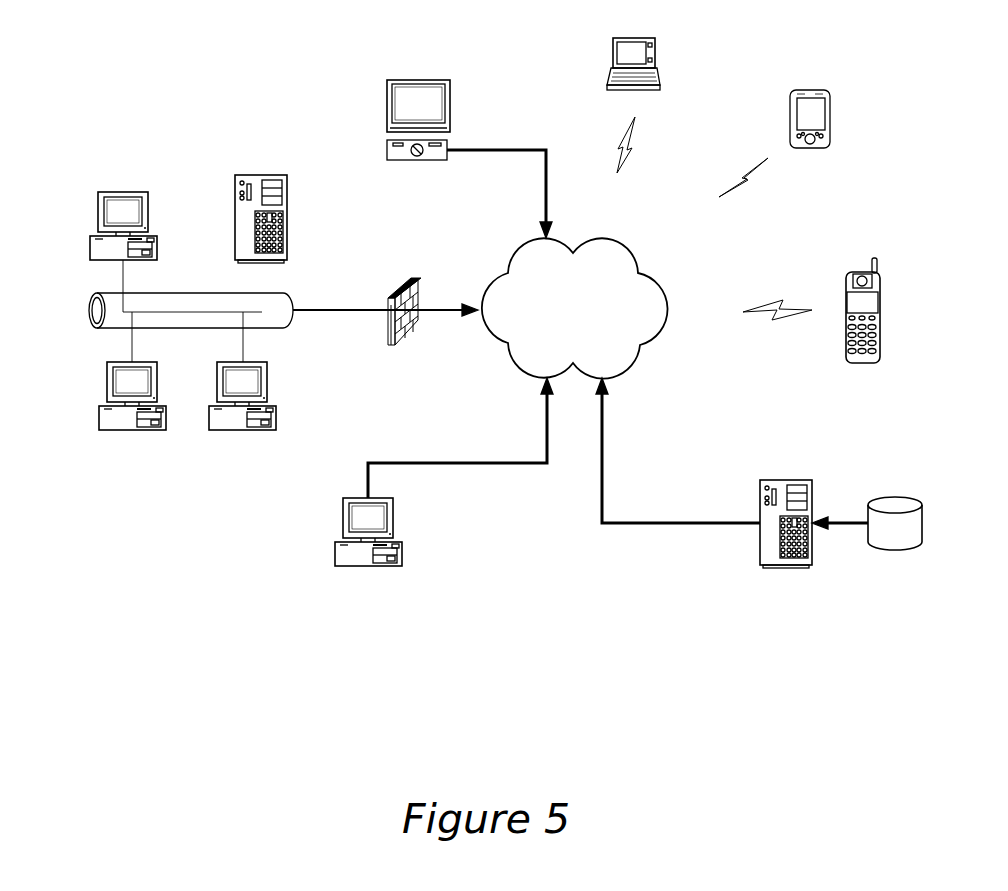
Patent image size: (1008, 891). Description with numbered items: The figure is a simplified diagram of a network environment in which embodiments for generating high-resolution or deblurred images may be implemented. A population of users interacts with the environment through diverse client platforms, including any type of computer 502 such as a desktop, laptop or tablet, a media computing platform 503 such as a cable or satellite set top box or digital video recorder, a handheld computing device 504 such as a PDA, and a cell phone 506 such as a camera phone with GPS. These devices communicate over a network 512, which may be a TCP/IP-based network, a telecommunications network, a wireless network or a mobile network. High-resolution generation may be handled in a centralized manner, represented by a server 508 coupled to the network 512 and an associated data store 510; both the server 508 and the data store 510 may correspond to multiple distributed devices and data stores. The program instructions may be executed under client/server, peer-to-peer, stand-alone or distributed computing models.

The computer 502 is at (97, 215).
The media computing platform 503 is at (386, 150).
The handheld computing device 504 is at (792, 90).
The cell phone 506 is at (848, 275).
The server 508 is at (768, 480).
The data store 510 is at (895, 498).
The network 512 is at (518, 252).